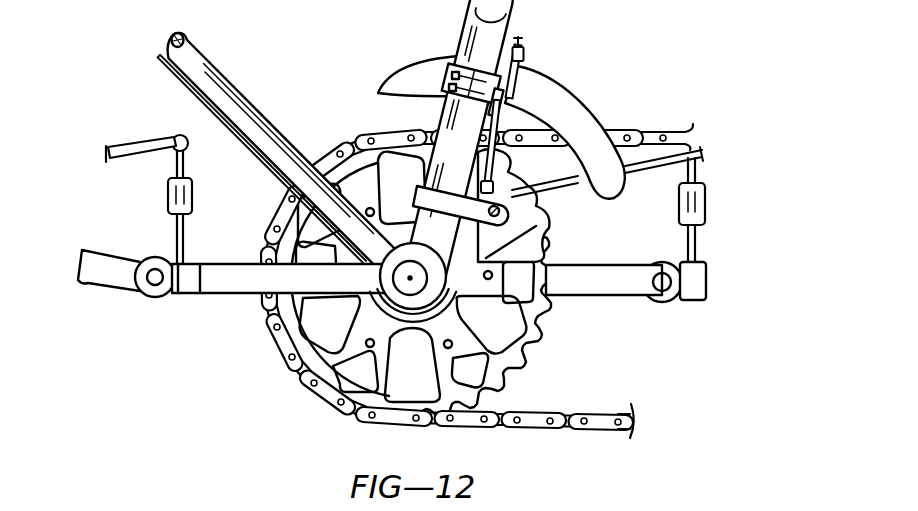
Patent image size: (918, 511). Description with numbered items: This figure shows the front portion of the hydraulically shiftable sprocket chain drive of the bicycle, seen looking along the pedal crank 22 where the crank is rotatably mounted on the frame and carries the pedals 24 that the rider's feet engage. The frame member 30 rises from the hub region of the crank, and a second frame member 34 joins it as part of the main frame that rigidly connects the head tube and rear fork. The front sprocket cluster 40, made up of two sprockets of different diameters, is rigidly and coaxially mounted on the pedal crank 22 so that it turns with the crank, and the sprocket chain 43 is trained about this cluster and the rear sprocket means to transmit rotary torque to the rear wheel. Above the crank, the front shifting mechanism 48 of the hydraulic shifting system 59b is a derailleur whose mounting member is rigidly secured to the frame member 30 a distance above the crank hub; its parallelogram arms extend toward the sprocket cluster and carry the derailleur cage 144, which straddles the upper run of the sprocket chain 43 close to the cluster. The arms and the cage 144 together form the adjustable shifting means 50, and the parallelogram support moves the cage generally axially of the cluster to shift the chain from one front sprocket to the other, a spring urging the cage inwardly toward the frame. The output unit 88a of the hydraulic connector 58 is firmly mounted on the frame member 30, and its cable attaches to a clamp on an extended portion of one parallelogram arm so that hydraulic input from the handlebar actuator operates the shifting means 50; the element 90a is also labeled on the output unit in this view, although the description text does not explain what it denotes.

The pedal crank 22 is at (241, 296).
The pedals 24 is at (655, 160).
The frame member 30 is at (462, 35).
The frame member 34 is at (232, 84).
The front sprocket cluster 40 is at (526, 371).
The sprocket chain 43 is at (568, 430).
The front shifting mechanism 48 is at (549, 347).
The adjustable shifting means 50 is at (576, 97).
The hydraulic connector 58 is at (164, 52).
The hydraulic shifting system 59b is at (546, 64).
The output unit 88a is at (545, 229).
The slot 90a is at (548, 307).
The derailleur cage 144 is at (396, 82).